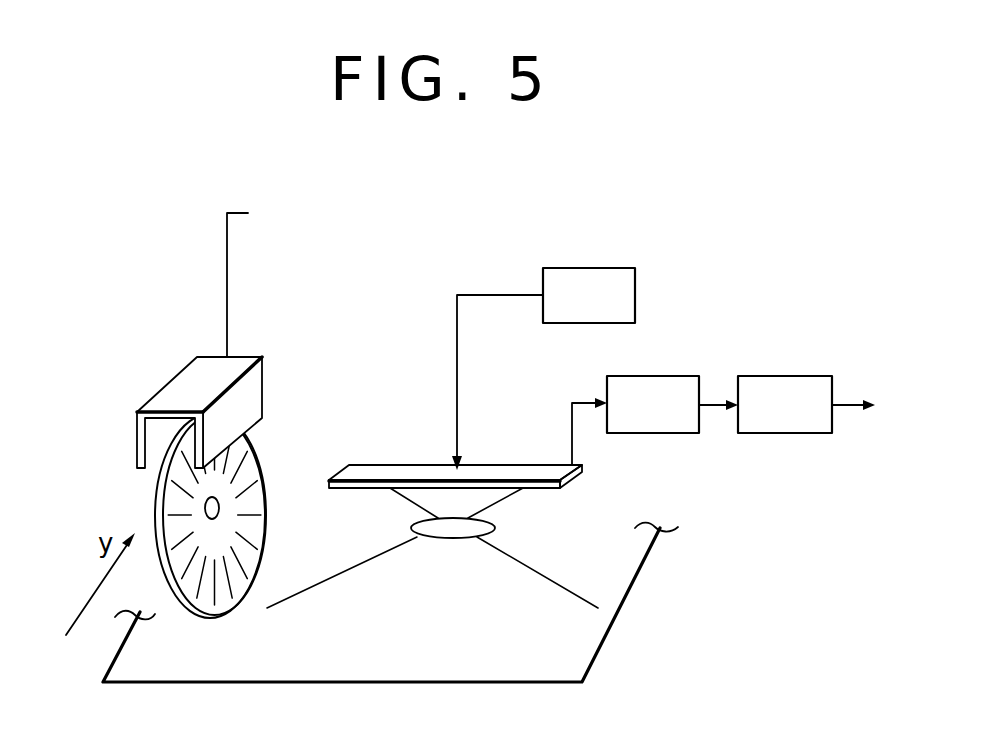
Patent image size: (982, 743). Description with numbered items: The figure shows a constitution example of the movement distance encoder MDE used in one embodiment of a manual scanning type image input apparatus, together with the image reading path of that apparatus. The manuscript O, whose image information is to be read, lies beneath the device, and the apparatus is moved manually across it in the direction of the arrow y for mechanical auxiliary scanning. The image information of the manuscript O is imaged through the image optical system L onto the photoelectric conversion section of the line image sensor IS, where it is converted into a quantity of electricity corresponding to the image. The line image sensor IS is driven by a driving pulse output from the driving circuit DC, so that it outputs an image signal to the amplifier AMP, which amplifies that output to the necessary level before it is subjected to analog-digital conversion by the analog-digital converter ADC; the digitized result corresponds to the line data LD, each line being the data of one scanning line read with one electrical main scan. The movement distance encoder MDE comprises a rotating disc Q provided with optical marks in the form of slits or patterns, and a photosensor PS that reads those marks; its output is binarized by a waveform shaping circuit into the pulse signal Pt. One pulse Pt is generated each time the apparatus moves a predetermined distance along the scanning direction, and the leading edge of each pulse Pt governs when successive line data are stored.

The movement distance encoding signal Pt is at (218, 297).
The photosensor PS is at (188, 387).
The movement distance encoder MDE is at (172, 415).
The rotating disc Q is at (268, 444).
The line image sensor IS is at (380, 462).
The image optical system L is at (495, 528).
The manuscript O is at (585, 657).
The line data LD is at (844, 402).
The driving circuit DC is at (543, 369).
The amplifier AMP is at (635, 420).
The analog-digital converter ADC is at (765, 404).